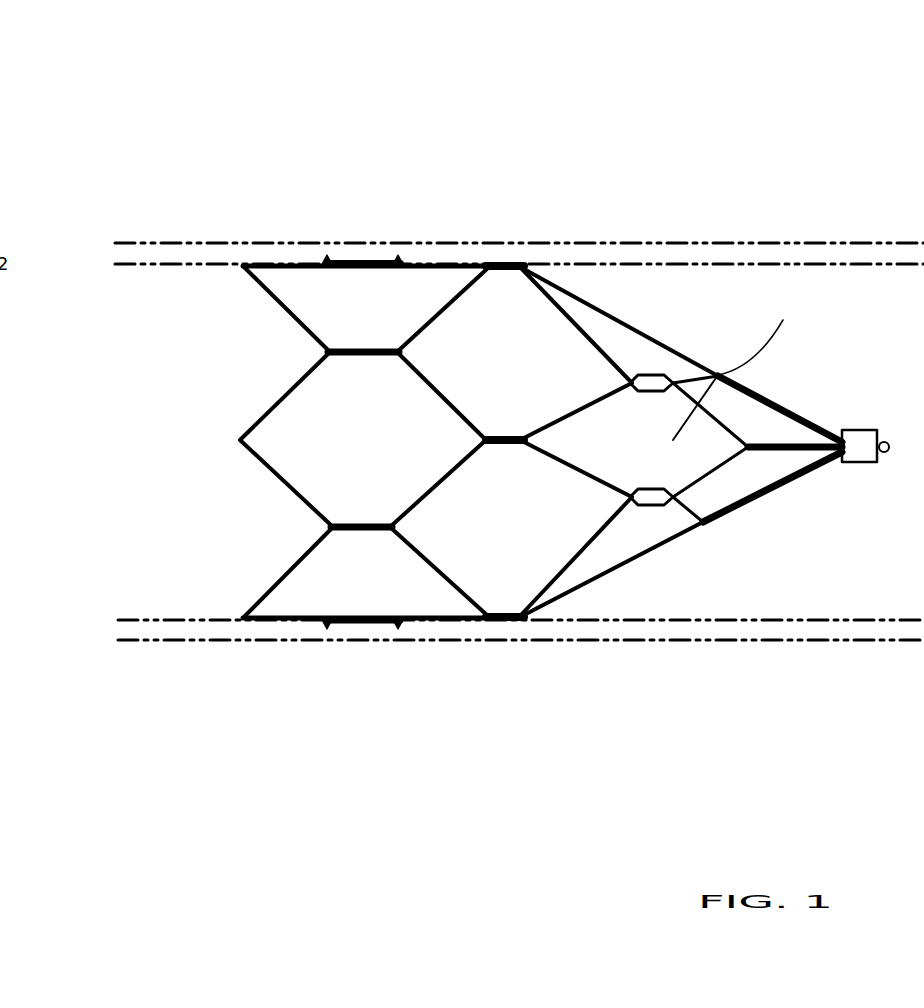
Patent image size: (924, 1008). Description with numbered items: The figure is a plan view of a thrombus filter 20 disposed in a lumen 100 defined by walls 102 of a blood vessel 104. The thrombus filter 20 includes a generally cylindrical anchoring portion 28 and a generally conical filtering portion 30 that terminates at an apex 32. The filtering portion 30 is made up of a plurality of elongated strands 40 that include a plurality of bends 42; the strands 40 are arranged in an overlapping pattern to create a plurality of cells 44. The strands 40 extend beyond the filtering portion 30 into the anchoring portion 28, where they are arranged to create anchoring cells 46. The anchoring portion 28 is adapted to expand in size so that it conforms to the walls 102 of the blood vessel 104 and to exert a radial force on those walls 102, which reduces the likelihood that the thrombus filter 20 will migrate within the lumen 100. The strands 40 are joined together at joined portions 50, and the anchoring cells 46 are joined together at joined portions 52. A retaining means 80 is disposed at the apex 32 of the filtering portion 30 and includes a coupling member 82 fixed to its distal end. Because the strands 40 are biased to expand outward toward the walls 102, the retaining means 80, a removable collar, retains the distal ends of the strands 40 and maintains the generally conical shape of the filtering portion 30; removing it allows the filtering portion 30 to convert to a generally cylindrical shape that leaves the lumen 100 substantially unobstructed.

The thrombus filter 20 is at (622, 98).
The anchoring portion 28 is at (334, 454).
The filtering portion 30 is at (707, 461).
The apex 32 is at (830, 568).
The elongated strands 40 is at (621, 317).
The bends 42 is at (663, 373).
The cells 44 is at (743, 423).
The anchoring cells 46 is at (347, 440).
The joined portions 50 is at (503, 240).
The joined portions 52 is at (363, 240).
The retaining means 80 is at (860, 464).
The coupling member 82 is at (888, 599).
The lumen 100 is at (464, 564).
The walls 102 is at (152, 632).
The blood vessel 104 is at (181, 650).